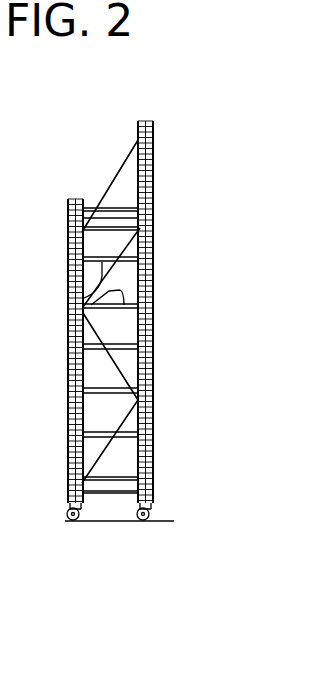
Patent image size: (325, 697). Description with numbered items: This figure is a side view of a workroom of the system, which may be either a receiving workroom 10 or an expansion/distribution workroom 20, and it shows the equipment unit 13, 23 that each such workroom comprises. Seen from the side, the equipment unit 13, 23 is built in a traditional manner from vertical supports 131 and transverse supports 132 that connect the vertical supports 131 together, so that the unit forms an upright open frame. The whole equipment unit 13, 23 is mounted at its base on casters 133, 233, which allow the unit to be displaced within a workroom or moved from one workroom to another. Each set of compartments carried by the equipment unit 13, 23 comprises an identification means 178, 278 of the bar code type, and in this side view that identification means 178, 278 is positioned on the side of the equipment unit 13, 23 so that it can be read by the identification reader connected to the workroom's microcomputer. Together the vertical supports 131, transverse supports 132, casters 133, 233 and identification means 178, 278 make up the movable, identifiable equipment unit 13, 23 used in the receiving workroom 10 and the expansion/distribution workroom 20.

The receiving workroom 10 is at (127, 330).
The expansion/distribution workroom 20 is at (100, 162).
The equipment unit 13 is at (188, 312).
The equipment unit 23 is at (153, 190).
The vertical supports 131 is at (153, 272).
The transverse supports 132 is at (153, 320).
The identification means 178 is at (70, 293).
The identification means 278 is at (90, 298).
The casters 133 is at (114, 532).
The casters 233 is at (149, 511).